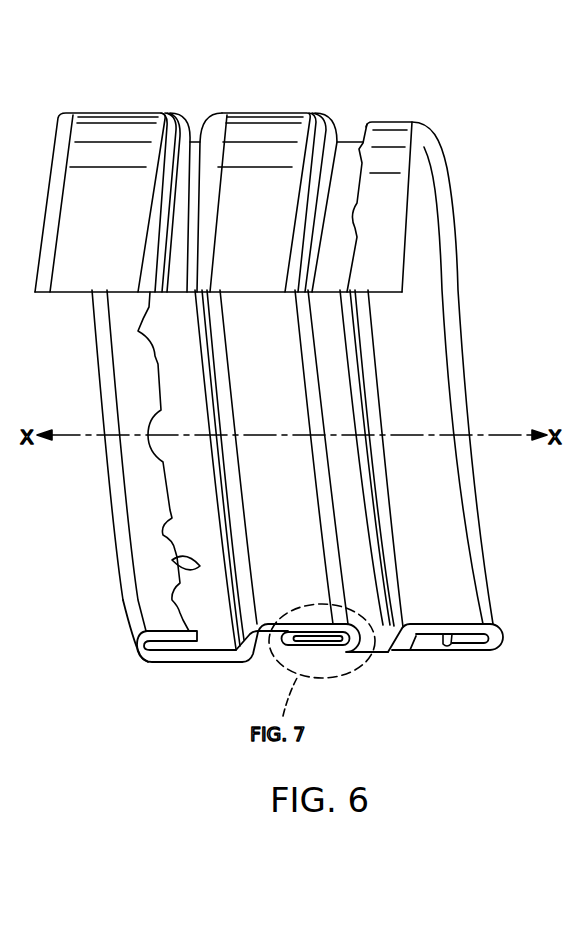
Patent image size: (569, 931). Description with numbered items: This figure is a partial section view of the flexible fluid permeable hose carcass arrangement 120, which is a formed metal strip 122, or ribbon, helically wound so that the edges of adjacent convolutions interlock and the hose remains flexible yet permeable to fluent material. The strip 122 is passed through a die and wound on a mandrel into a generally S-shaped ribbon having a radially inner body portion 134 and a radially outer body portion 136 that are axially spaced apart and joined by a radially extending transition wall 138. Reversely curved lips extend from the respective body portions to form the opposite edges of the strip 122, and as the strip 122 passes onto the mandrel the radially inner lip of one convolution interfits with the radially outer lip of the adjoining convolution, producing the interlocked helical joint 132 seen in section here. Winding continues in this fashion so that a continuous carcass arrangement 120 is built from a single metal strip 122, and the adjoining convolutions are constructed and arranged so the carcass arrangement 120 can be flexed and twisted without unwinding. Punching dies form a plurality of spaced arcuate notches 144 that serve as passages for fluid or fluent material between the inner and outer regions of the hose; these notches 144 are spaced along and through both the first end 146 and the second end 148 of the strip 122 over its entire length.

The flexible fluid permeable hose carcass arrangement 120 is at (532, 74).
The metal strip 122 is at (222, 663).
The joint 132 is at (335, 697).
The radially inner body portion 134 is at (452, 623).
The radially outer body portion 136 is at (167, 664).
The transition wall 138 is at (395, 622).
The arcuate notches 144 is at (138, 333).
The first end 146 is at (200, 566).
The second end 148 is at (446, 650).